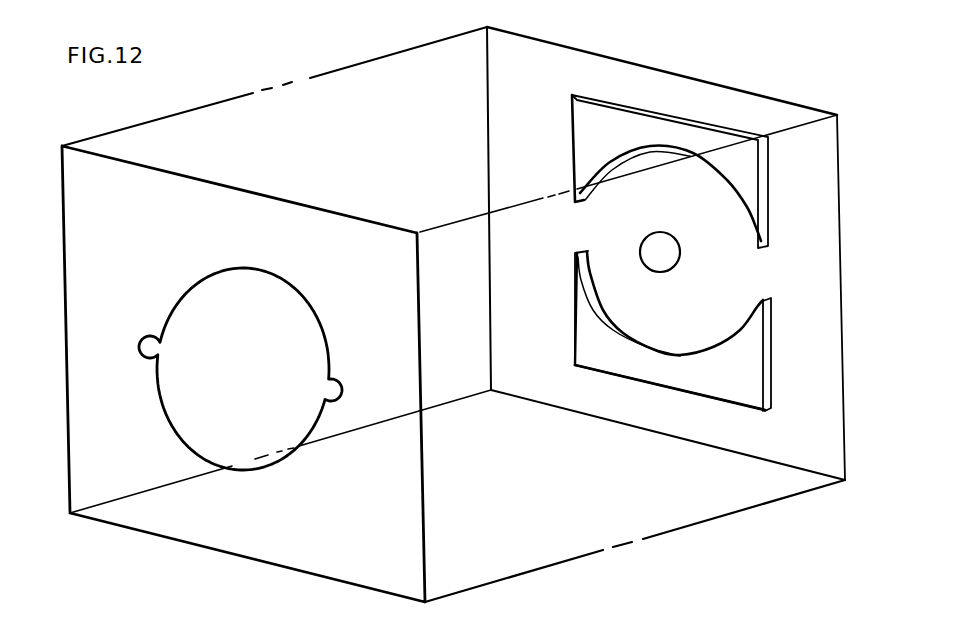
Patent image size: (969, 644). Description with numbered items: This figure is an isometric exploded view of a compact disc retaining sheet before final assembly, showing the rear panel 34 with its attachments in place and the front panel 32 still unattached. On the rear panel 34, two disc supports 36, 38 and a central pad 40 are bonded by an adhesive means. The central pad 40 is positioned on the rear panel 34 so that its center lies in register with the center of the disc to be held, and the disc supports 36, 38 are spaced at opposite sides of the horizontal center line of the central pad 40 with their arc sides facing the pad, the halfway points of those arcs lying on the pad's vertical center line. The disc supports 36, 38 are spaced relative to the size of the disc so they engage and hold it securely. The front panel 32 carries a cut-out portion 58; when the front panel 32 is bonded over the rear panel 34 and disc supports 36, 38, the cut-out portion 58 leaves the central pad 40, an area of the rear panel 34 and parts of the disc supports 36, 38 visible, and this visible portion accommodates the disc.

The front panel 32 is at (390, 287).
The rear panel 34 is at (820, 272).
The disc support 36 is at (603, 137).
The disc support 38 is at (597, 350).
The central pad 40 is at (660, 257).
The cut-out portion 58 is at (303, 372).